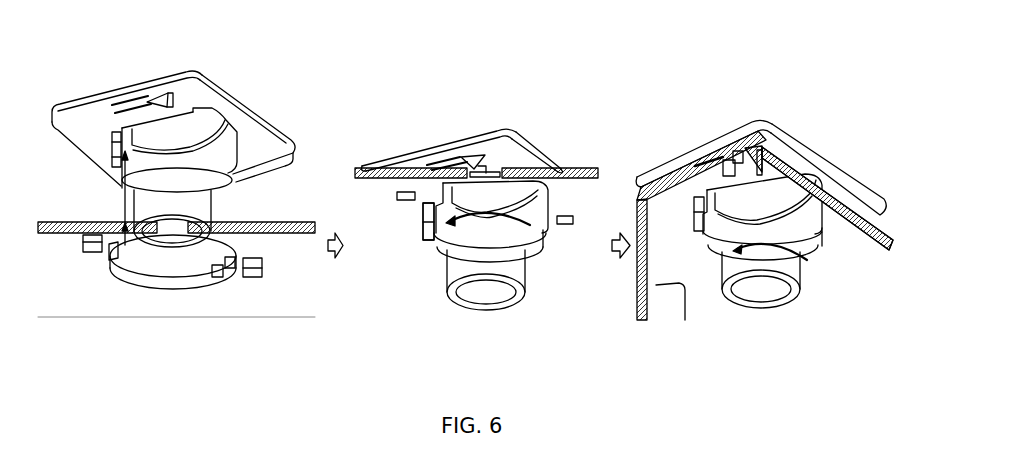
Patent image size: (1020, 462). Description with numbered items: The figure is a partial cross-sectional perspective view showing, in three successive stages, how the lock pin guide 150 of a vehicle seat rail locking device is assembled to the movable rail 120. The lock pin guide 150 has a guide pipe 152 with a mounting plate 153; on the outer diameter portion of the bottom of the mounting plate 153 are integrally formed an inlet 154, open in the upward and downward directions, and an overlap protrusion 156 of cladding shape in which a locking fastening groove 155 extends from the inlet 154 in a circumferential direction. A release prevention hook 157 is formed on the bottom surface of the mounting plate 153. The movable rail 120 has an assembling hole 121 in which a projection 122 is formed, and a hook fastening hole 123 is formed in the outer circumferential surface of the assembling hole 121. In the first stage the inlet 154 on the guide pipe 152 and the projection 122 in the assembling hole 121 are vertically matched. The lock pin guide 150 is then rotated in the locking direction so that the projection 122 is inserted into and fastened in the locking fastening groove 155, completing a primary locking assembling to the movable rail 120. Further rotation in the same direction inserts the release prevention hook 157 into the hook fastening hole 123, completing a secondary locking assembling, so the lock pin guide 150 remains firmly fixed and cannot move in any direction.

The movable rail 120 is at (300, 212).
The assembling hole 121 is at (170, 287).
The projection 122 is at (125, 248).
The hook fastening hole 123 is at (92, 254).
The lock pin guide 150 is at (258, 80).
The guide pipe 152 is at (232, 180).
The mounting plate 153 is at (255, 110).
The inlet 154 is at (121, 136).
The locking fastening groove 155 is at (181, 113).
The overlap protrusion 156 is at (153, 127).
The release prevention hook 157 is at (157, 100).